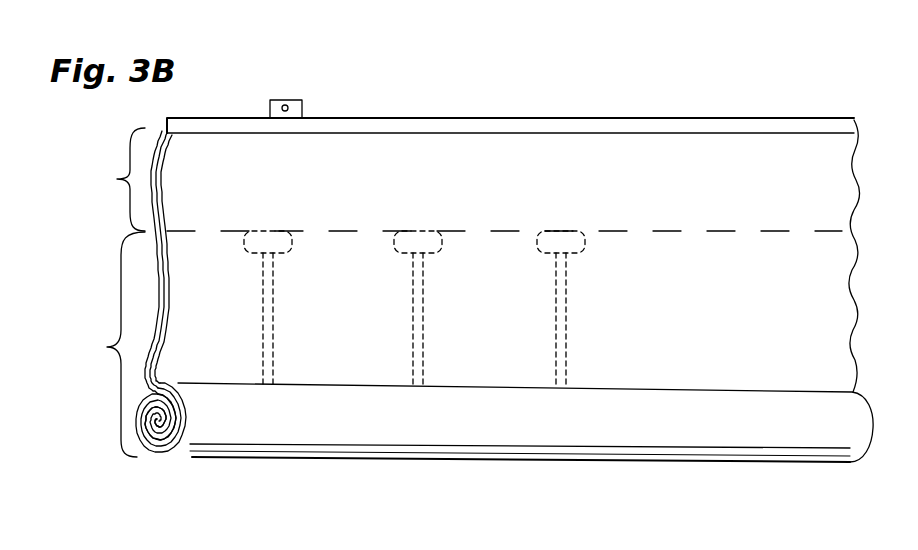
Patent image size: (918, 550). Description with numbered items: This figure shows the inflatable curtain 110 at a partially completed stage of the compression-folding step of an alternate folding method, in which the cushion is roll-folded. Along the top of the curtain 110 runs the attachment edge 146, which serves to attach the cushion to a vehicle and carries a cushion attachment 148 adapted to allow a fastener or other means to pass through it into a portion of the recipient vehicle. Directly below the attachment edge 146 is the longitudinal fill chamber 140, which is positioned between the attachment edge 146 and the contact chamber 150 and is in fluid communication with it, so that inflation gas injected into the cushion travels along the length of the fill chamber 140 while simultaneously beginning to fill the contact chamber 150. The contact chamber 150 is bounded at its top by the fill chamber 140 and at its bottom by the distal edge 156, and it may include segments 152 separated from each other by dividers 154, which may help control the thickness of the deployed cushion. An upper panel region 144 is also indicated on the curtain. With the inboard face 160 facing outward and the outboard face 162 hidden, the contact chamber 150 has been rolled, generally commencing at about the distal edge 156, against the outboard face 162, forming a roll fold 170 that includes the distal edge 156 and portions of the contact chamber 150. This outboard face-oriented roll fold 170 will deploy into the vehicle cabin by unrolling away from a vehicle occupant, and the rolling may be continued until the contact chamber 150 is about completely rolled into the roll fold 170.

The inflatable curtain 110 is at (682, 103).
The longitudinal fill chamber 140 is at (118, 179).
The upper panel surface 144 is at (207, 182).
The attachment edge 146 is at (498, 125).
The cushion attachment 148 is at (297, 108).
The contact chamber 150 is at (115, 344).
The segment 152 is at (203, 366).
The divider 154 is at (268, 368).
The distal edge 156 is at (165, 420).
The inboard face 160 is at (524, 277).
The outboard face 162 is at (521, 347).
The roll fold 170 is at (404, 427).